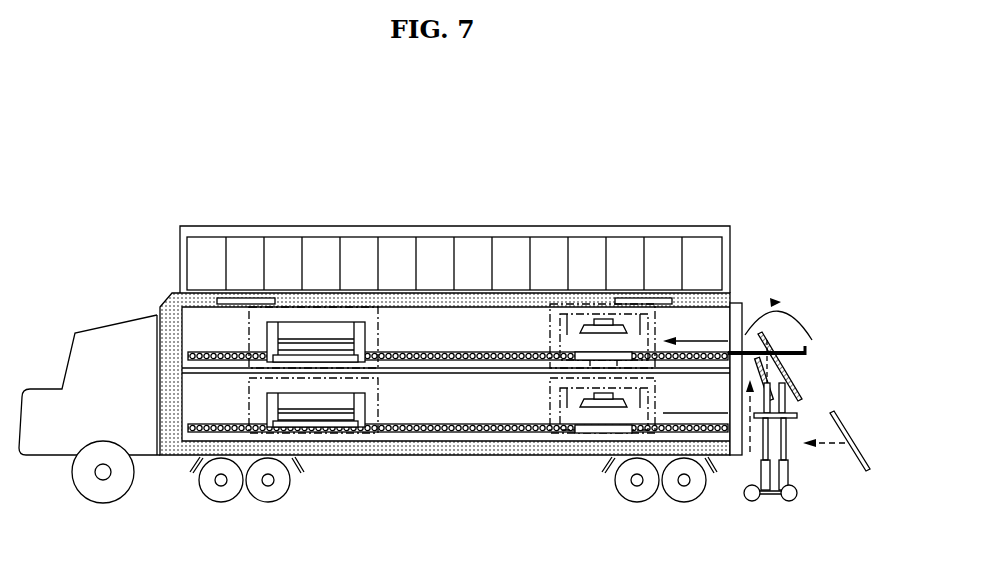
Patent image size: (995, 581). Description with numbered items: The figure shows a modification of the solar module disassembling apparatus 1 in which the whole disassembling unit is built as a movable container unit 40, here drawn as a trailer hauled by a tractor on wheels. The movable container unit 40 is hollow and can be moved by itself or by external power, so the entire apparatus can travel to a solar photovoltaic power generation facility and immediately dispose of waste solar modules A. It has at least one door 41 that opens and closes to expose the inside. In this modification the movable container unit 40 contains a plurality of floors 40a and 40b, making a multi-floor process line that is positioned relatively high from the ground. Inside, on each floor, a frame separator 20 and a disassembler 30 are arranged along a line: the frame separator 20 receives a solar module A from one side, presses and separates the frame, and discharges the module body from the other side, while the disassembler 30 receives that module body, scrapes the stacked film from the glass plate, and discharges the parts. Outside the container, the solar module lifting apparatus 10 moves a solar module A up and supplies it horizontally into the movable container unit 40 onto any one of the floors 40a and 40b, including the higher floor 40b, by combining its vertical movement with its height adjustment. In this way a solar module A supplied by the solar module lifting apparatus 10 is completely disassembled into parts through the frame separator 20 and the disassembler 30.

The solar module disassembling apparatus 1 is at (161, 168).
The solar module lifting apparatus 10 is at (803, 480).
The frame separator 20 is at (545, 342).
The disassembler 30 is at (383, 402).
The movable container unit 40 is at (730, 322).
The floor 40a is at (165, 402).
The floor 40b is at (168, 342).
The door 41 is at (641, 226).
The solar module A is at (852, 437).